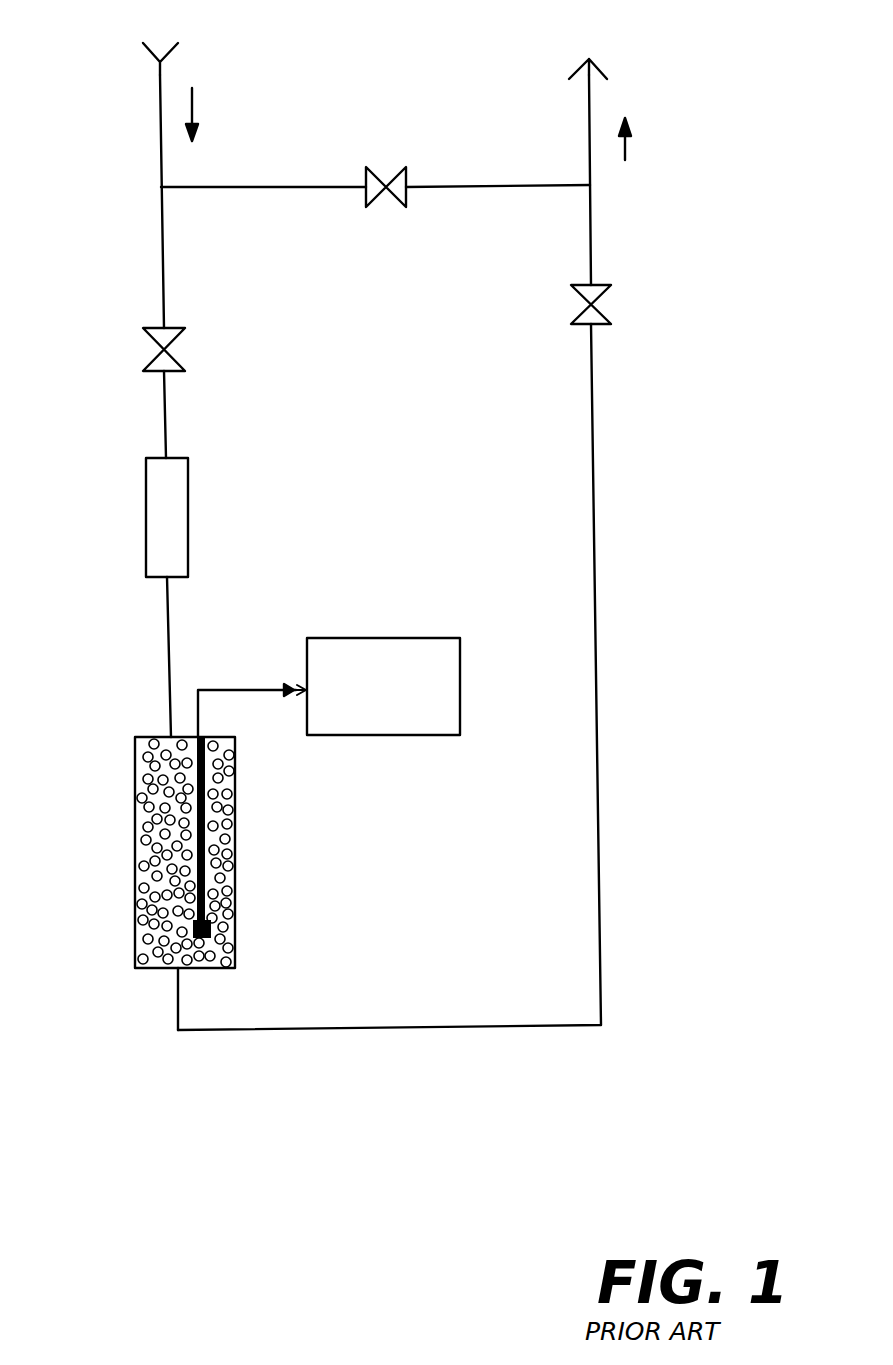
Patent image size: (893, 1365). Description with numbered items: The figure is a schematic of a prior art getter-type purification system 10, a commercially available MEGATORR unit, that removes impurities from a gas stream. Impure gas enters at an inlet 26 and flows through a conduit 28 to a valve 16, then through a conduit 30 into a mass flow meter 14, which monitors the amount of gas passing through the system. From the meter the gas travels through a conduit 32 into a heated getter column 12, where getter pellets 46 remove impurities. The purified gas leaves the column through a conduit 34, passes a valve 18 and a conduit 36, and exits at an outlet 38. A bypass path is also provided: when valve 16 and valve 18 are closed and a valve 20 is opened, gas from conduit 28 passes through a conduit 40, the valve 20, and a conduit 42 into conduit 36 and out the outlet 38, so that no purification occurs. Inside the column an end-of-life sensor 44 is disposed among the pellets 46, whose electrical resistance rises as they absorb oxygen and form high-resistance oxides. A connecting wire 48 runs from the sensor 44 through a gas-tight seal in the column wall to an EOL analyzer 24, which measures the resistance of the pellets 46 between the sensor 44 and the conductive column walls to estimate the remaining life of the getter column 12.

The getter-type purification system 10 is at (683, 512).
The heated getter column 12 is at (237, 966).
The mass flow meter 14 is at (178, 527).
The valve 16 is at (178, 342).
The valve 18 is at (598, 293).
The valve 20 is at (371, 175).
The EOL analyzer 24 is at (362, 728).
The inlet 26 is at (167, 52).
The conduit 28 is at (163, 282).
The conduit 30 is at (165, 415).
The conduit 32 is at (166, 630).
The conduit 34 is at (598, 728).
The conduit 36 is at (591, 262).
The outlet 38 is at (590, 52).
The conduit 40 is at (250, 186).
The conduit 42 is at (473, 184).
The EOL sensor 44 is at (205, 930).
The getter pellets 46 is at (145, 950).
The connecting wire 48 is at (222, 688).